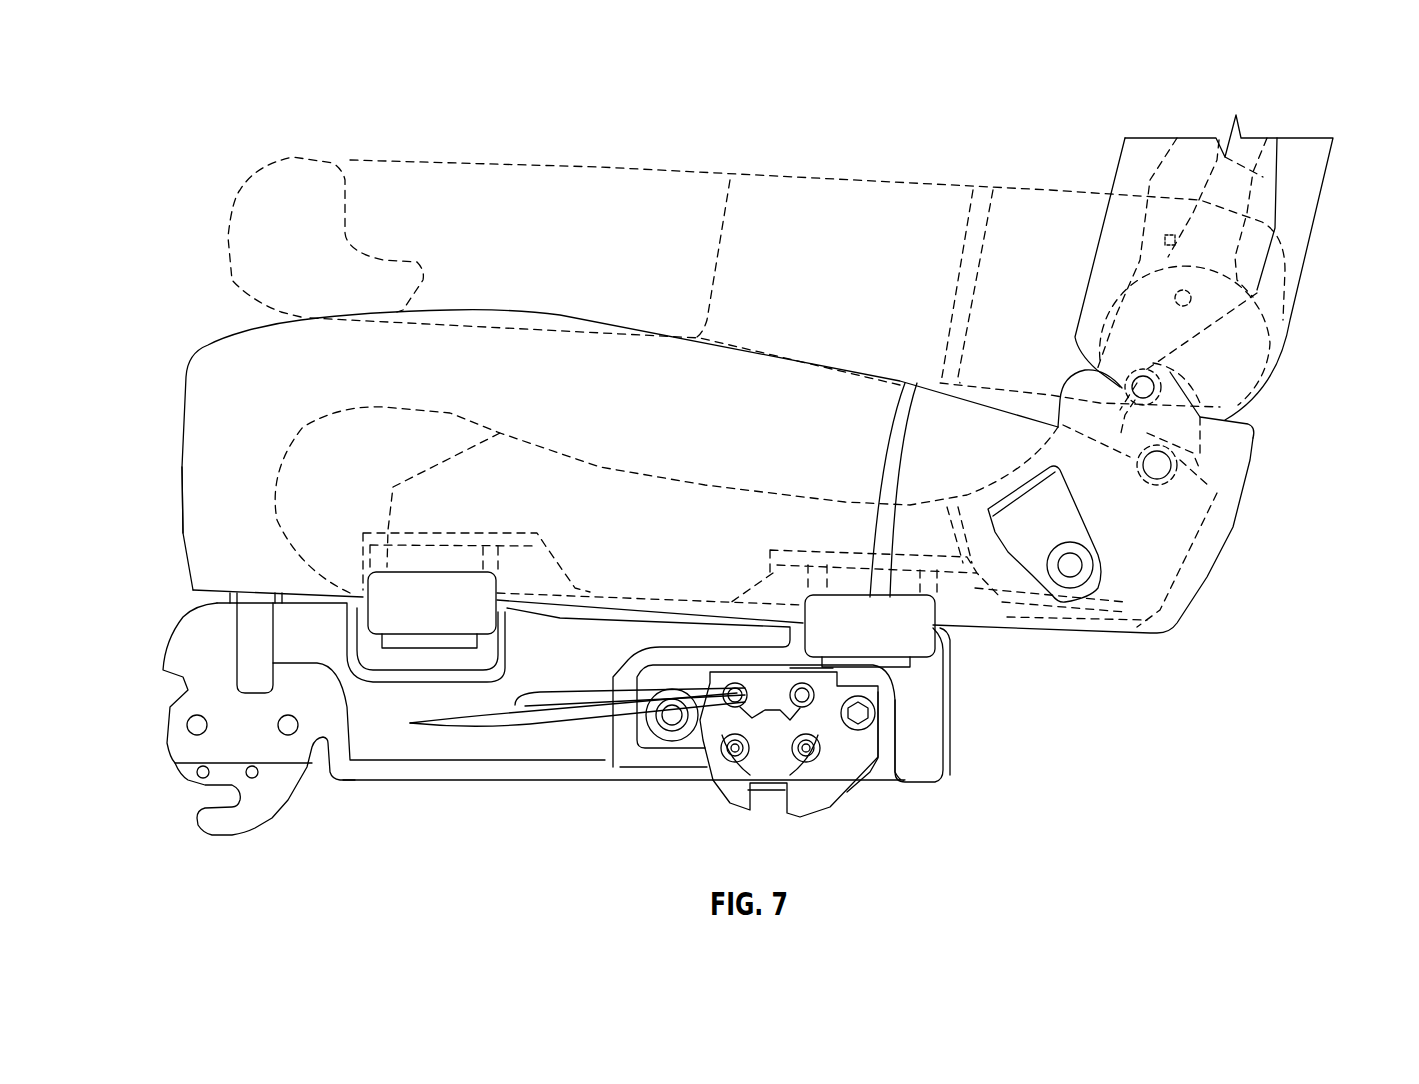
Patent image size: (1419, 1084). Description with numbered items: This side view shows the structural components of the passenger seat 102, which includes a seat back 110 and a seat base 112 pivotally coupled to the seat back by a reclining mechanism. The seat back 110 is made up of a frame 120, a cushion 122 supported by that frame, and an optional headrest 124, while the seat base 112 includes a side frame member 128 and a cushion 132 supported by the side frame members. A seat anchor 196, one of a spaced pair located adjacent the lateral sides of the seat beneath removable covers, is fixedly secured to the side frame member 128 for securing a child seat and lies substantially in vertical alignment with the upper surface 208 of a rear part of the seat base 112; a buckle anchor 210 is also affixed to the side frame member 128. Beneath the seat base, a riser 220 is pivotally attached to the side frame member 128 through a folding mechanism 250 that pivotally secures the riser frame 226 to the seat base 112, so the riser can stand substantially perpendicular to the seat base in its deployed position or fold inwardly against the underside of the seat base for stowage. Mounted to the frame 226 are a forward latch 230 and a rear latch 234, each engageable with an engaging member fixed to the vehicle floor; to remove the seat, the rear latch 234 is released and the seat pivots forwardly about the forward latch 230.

The passenger seat 102 is at (858, 114).
The seat back 110 is at (1308, 180).
The seat base 112 is at (200, 537).
The frame 120 is at (1293, 147).
The cushion 122 is at (550, 187).
The headrest 124 is at (293, 157).
The side frame member 128 is at (640, 500).
The cushion 132 is at (193, 433).
The seat anchor 196 is at (1260, 297).
The upper surface 208 is at (1253, 430).
The buckle anchor 210 is at (1070, 565).
The riser 220 is at (640, 810).
The frame 226 is at (543, 753).
The forward latch 230 is at (245, 828).
The rear latch 234 is at (915, 762).
The folding mechanism 250 is at (453, 613).